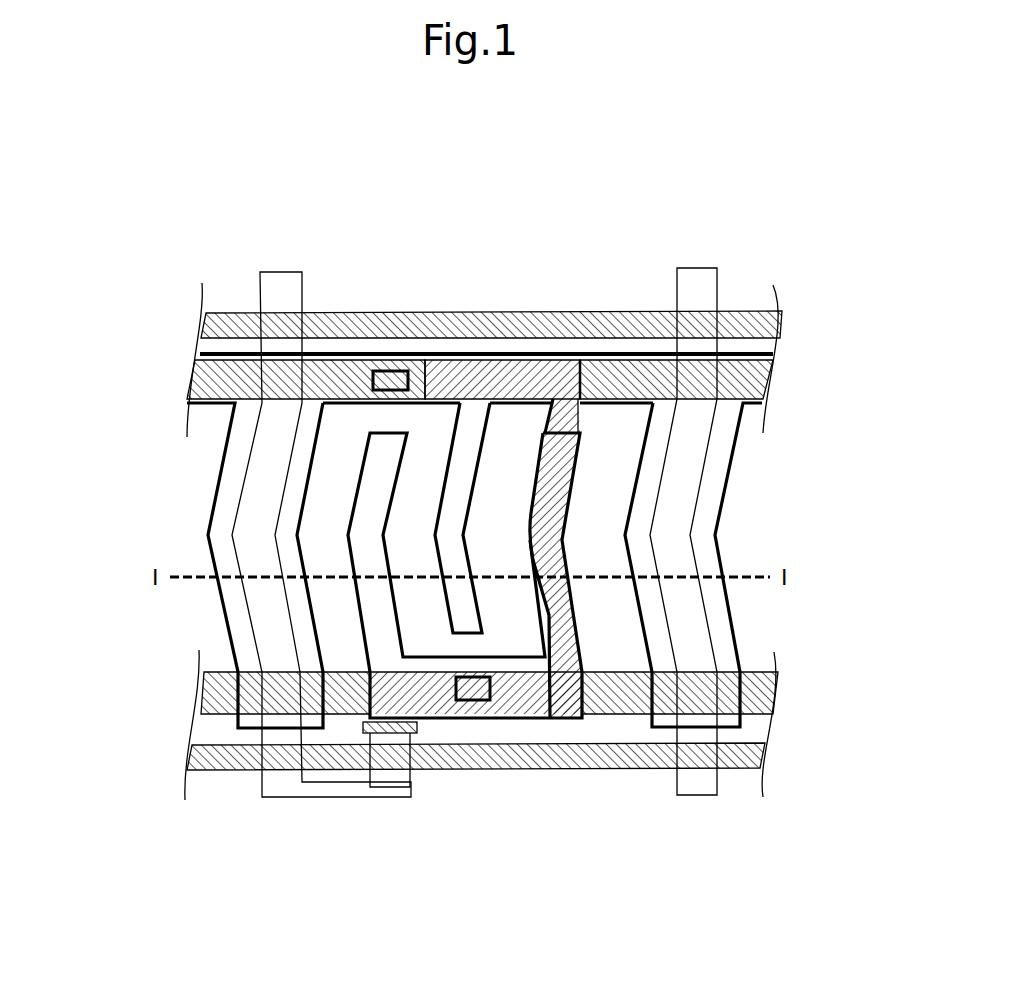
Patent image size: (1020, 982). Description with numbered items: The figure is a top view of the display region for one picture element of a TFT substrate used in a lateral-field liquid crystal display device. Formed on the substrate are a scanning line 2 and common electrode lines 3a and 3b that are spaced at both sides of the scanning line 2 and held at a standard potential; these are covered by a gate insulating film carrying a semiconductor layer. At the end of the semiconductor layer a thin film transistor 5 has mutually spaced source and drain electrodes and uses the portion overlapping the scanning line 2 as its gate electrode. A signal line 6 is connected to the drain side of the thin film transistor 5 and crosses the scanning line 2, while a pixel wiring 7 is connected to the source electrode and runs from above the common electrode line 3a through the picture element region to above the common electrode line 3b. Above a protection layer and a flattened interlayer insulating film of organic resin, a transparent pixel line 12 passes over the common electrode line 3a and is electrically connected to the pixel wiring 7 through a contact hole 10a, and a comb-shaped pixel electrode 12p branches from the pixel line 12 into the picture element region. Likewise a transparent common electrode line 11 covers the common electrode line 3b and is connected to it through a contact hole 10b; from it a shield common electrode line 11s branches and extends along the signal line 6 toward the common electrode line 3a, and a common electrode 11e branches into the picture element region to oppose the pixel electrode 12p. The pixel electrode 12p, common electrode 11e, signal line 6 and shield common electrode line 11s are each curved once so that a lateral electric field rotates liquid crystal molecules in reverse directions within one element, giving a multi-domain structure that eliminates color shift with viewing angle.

The scanning line 2 is at (207, 318).
The common electrode line 3a is at (218, 695).
The common electrode line 3b is at (187, 396).
The thin film transistor 5 is at (387, 760).
The signal line 6 is at (280, 287).
The pixel wiring 7 is at (532, 700).
The contact hole 10a is at (478, 702).
The contact hole 10b is at (400, 370).
The common electrode line 11 is at (510, 354).
The common electrode 11e is at (460, 532).
The shield common electrode line 11s is at (223, 627).
The pixel line 12 is at (438, 663).
The pixel electrode 12p is at (367, 495).